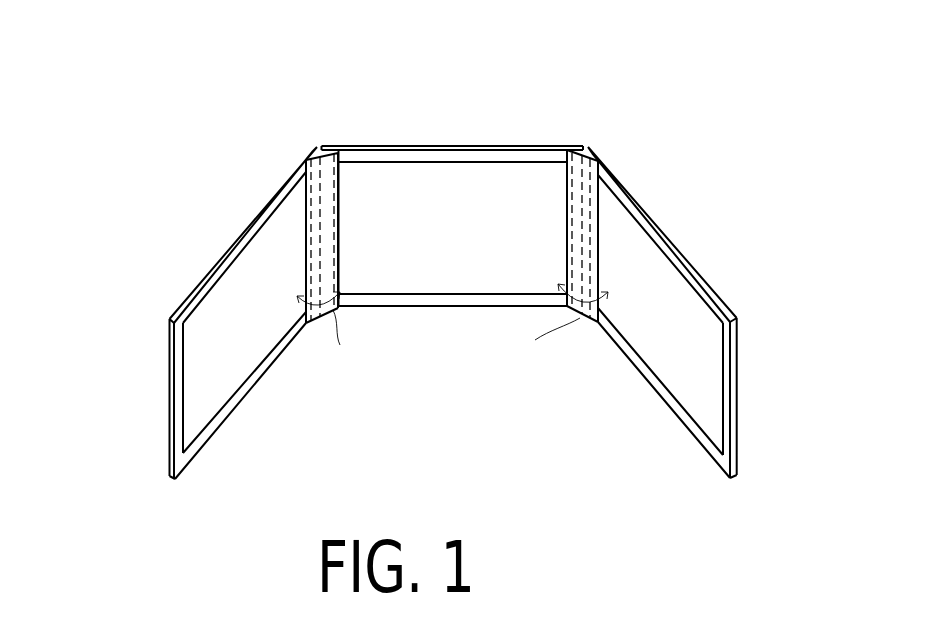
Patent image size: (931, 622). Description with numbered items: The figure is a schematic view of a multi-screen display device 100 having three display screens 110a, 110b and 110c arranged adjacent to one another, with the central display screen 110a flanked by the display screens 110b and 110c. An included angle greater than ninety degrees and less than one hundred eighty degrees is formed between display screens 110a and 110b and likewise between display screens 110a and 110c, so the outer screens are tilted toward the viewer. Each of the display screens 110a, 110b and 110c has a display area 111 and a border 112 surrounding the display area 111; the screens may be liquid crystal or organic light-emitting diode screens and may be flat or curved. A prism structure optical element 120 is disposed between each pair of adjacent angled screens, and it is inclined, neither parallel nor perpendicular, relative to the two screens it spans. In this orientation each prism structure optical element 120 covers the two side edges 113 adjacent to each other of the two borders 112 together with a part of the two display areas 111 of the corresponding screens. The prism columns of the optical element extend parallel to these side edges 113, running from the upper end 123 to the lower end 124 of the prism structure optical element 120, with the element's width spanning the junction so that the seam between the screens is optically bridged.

The multi-screen display device 100 is at (142, 42).
The display screen 110a is at (450, 141).
The display screen 110b is at (207, 240).
The display screen 110c is at (702, 245).
The display area 111 is at (215, 380).
The border 112 is at (178, 385).
The side edge 113 is at (300, 191).
The prism structure optical element 120 is at (604, 212).
The upper end 123 is at (582, 150).
The lower end 124 is at (583, 318).